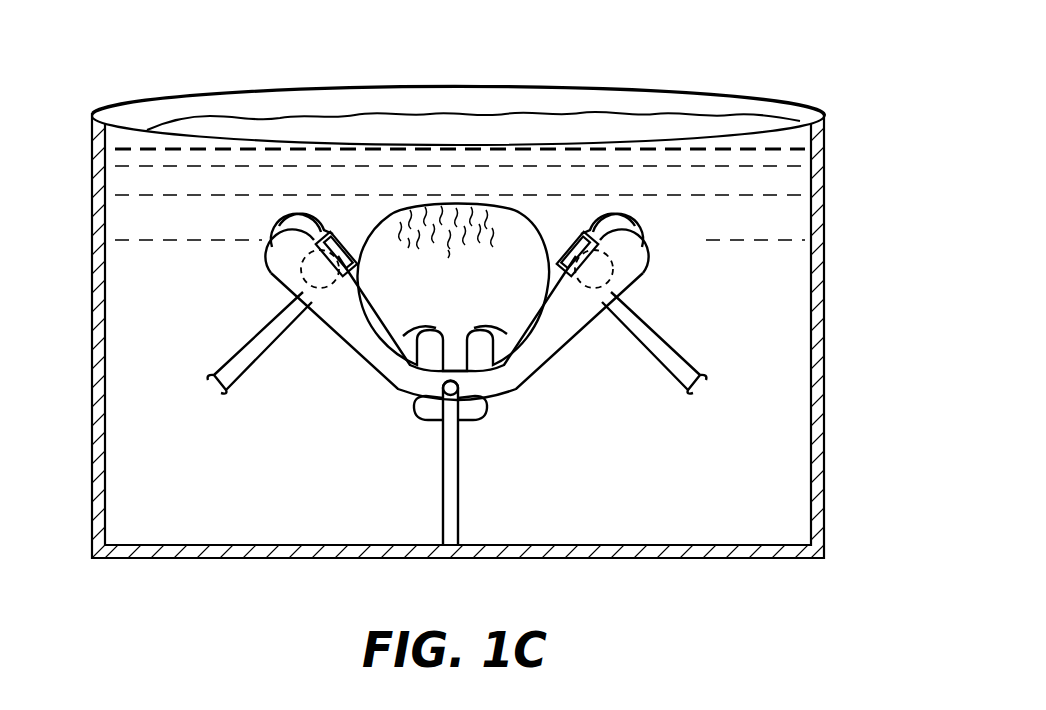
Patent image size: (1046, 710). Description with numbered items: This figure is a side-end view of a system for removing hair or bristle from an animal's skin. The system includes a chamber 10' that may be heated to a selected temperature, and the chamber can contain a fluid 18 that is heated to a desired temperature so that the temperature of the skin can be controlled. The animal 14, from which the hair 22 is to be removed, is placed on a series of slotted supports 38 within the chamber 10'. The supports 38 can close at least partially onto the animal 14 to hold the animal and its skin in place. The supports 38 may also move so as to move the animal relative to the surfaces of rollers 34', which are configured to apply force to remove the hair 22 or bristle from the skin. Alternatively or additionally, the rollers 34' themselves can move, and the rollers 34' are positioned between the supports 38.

The chamber 10' is at (513, 322).
The fluid 18 is at (755, 108).
The animal 14 is at (513, 232).
The hair 22 is at (447, 202).
The rollers 34' is at (467, 163).
The slotted supports 38 is at (547, 354).